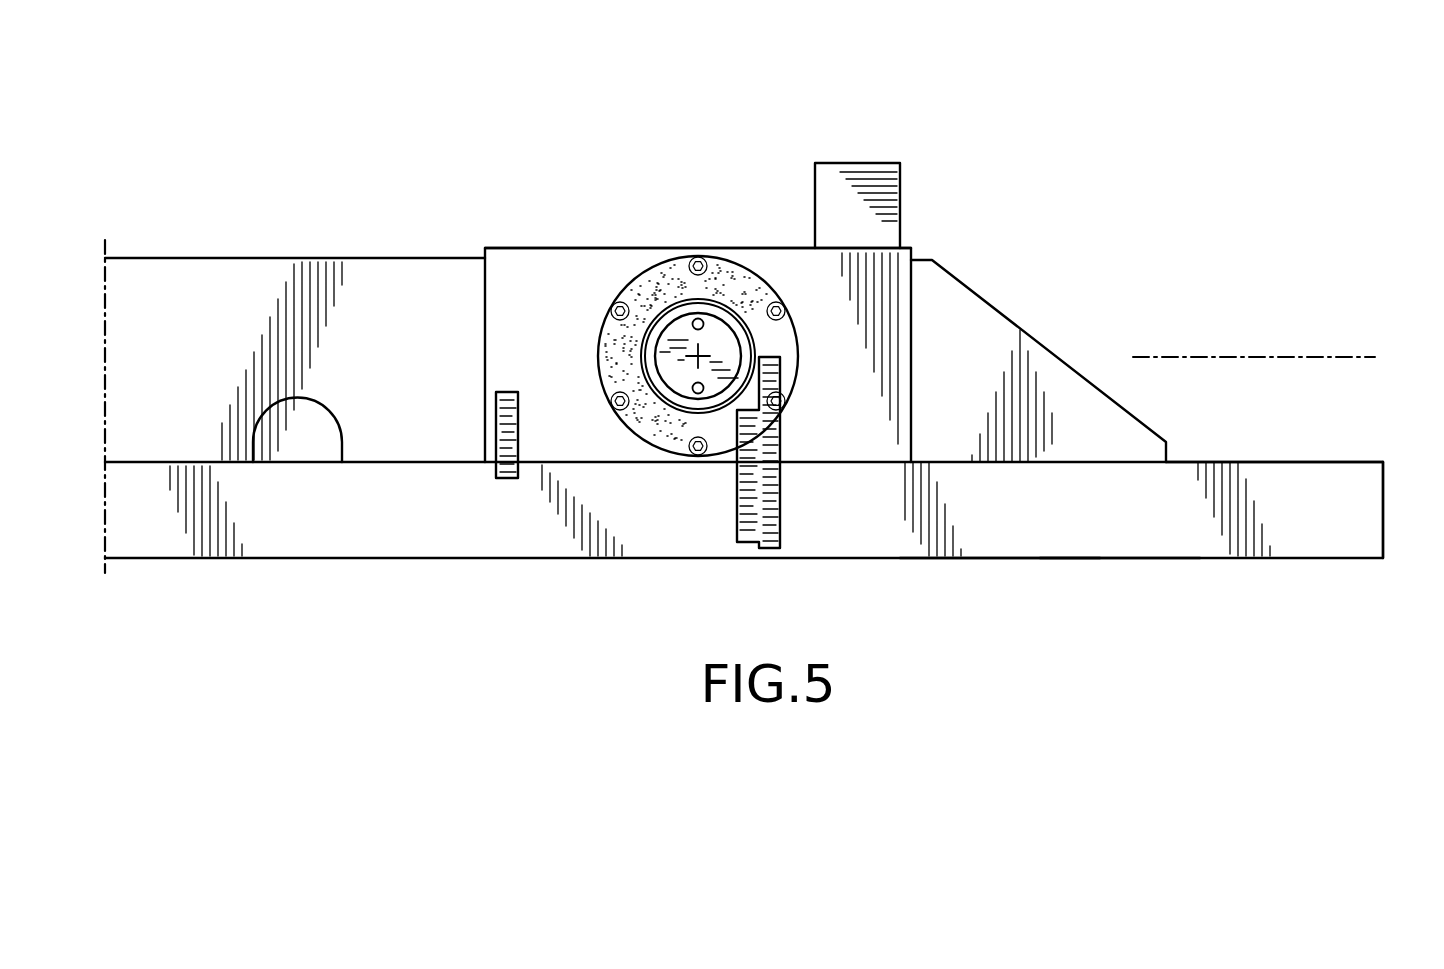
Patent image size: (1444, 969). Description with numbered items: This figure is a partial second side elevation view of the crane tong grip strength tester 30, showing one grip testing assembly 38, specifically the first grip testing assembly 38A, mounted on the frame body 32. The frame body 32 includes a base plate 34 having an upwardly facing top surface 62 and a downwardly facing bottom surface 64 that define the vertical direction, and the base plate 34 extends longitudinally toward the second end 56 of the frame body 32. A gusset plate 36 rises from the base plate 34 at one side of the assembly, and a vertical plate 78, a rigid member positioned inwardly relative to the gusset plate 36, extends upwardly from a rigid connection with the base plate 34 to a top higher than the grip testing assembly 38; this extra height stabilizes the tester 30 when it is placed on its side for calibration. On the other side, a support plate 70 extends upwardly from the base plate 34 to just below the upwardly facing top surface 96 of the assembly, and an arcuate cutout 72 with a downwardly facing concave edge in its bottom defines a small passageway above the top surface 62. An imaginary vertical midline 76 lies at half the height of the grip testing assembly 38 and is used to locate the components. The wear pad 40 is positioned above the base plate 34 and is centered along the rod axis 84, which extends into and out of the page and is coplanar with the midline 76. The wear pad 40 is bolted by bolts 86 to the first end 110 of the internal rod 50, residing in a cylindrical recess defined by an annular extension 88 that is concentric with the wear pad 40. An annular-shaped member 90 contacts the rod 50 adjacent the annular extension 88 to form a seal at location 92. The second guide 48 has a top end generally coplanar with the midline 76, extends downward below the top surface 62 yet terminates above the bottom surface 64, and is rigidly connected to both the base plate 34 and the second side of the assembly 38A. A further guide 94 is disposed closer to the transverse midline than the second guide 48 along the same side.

The crane tong grip strength tester 30 is at (1125, 95).
The frame body 32 is at (1203, 562).
The base plate 34 is at (1123, 550).
The gusset plate 36 is at (985, 317).
The grip testing assembly 38 is at (582, 245).
The first grip testing assembly 38A is at (698, 355).
The wear pad 40 is at (667, 363).
The second guide 48 is at (745, 522).
The internal rod 50 is at (733, 318).
The second end 56 is at (1398, 522).
The upwardly facing top surface 62 is at (1287, 462).
The downwardly facing bottom surface 64 is at (1023, 558).
The support plate 70 is at (213, 275).
The arcuate cutout 72 is at (322, 410).
The imaginary vertical midline 76 is at (1283, 357).
The vertical plate 78 is at (865, 163).
The rod axis 84 is at (693, 360).
The bolts 86 is at (697, 322).
The annular extension 88 is at (698, 356).
The annular-shaped member 90 is at (650, 290).
The seal location 92 is at (760, 340).
The guide 94 is at (502, 433).
The upwardly facing top surface 96 is at (535, 247).
The first end of rod 110 is at (698, 356).